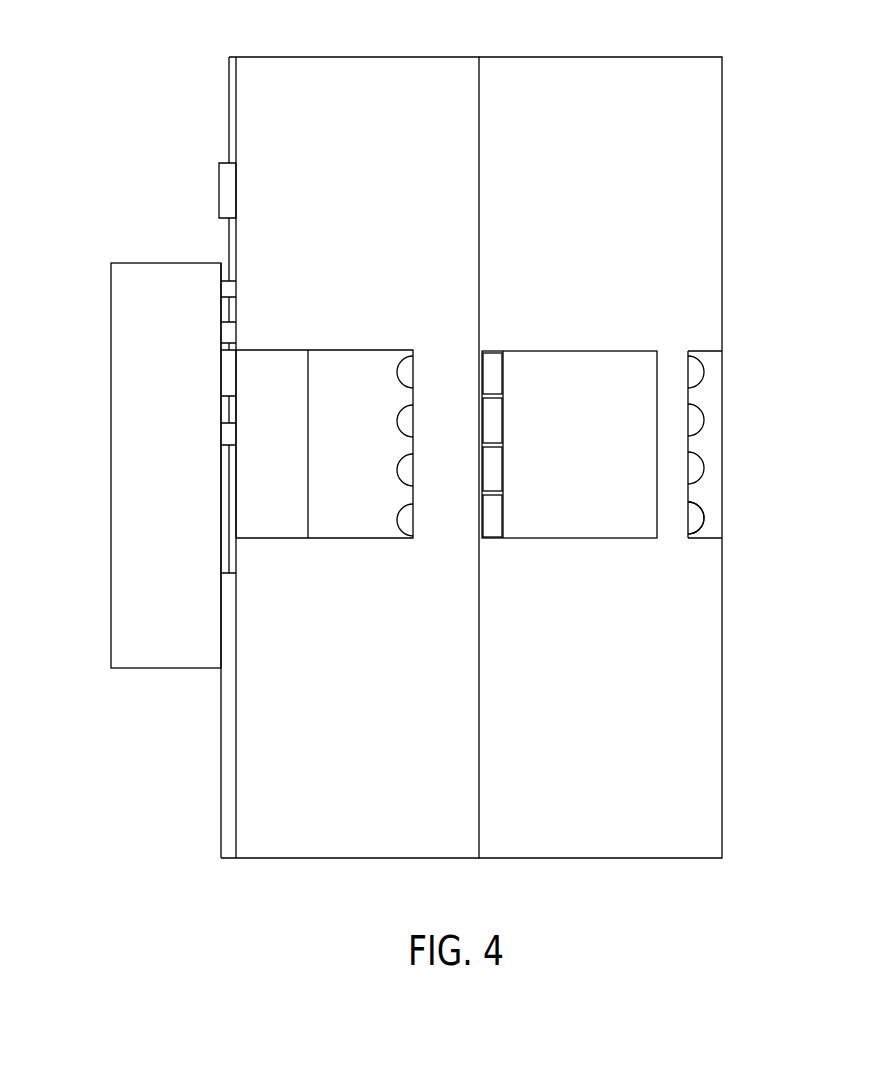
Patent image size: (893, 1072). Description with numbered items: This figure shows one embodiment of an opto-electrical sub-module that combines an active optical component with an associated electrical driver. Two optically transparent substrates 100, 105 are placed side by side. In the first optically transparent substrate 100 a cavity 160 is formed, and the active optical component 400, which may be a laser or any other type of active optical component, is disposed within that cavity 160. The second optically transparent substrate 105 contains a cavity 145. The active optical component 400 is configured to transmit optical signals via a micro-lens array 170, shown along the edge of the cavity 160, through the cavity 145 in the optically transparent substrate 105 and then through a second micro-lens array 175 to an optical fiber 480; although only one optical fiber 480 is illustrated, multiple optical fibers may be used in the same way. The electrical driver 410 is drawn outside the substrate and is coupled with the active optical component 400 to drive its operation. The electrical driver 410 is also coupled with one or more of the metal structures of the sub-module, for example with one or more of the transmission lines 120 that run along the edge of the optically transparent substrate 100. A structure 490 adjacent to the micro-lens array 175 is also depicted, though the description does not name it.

The optically transparent substrate 100 is at (378, 75).
The optically transparent substrate 105 is at (590, 75).
The transmission lines 120 is at (222, 793).
The cavity 145 is at (613, 362).
The cavity 160 is at (373, 362).
The micro-lens array 170 is at (420, 497).
The micro-lens array 175 is at (677, 490).
The active optical component 400 is at (270, 525).
The electrical driver 410 is at (135, 423).
The optical fiber 480 is at (702, 405).
The connector housing 490 is at (712, 355).